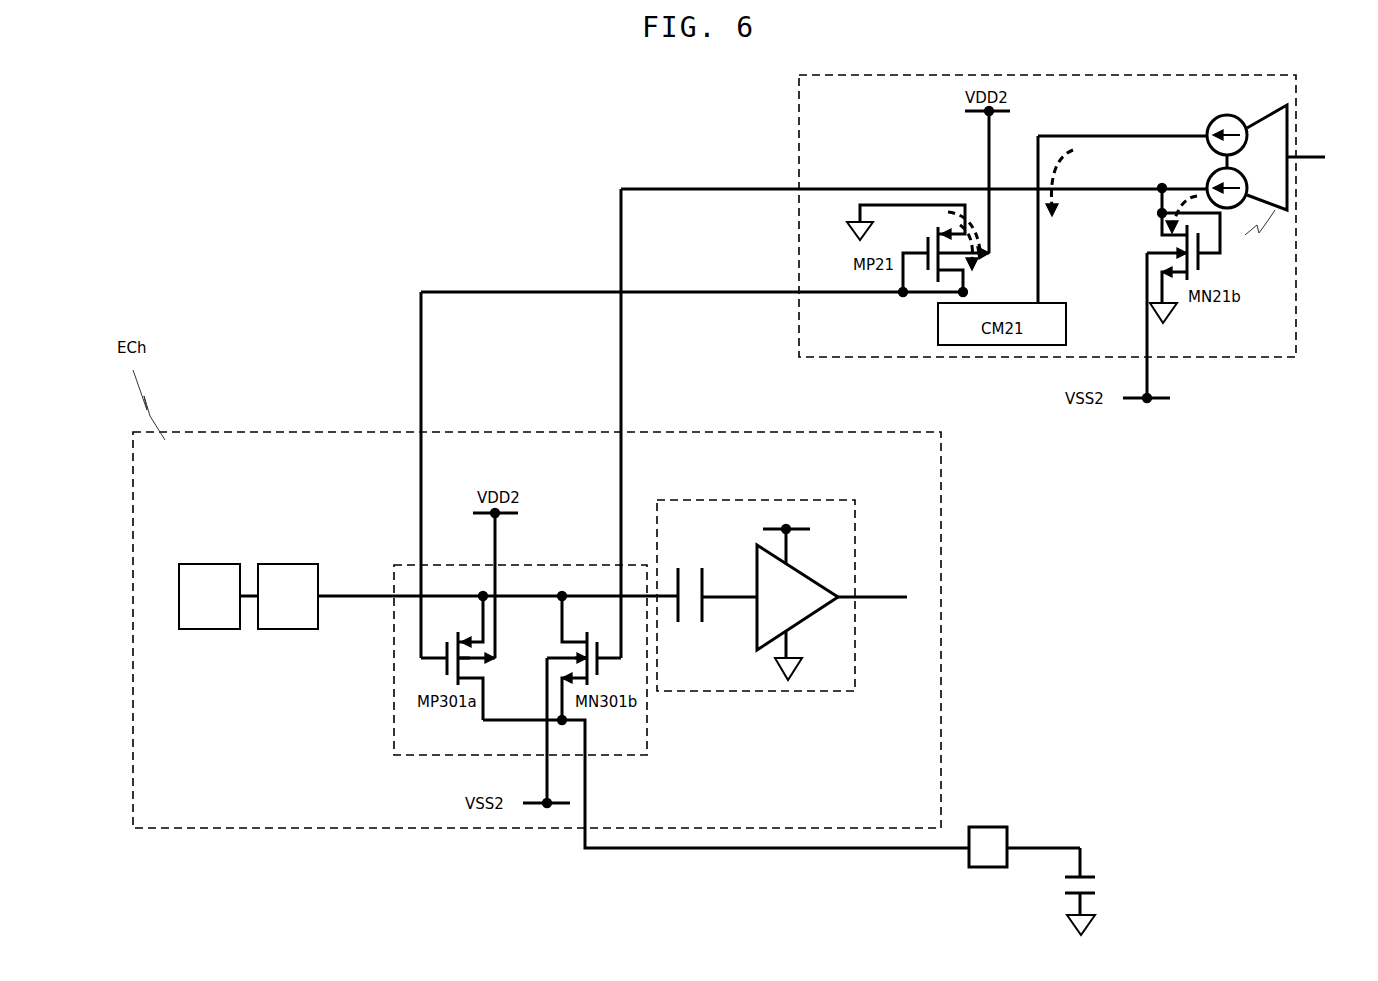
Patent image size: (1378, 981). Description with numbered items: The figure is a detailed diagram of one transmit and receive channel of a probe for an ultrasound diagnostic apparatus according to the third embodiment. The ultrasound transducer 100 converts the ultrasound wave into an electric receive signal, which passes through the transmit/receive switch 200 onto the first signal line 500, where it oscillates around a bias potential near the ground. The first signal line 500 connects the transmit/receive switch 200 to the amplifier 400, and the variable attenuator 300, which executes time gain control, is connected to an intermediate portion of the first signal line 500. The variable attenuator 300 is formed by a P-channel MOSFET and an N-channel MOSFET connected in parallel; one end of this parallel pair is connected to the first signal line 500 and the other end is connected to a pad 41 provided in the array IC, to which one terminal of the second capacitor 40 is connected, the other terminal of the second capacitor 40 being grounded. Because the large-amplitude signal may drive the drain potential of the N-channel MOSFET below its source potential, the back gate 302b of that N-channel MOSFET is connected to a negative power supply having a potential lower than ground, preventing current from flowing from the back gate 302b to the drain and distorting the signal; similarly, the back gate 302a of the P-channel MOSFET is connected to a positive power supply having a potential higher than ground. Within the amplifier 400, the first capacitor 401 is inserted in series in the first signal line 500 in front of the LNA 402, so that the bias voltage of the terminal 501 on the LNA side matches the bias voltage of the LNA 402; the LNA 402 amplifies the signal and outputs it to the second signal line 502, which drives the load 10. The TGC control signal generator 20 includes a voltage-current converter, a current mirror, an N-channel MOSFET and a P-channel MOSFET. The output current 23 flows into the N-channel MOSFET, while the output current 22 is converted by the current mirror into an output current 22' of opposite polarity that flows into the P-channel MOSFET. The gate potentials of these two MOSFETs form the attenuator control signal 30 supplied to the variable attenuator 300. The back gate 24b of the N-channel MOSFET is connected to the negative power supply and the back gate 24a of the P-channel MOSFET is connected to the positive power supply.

The load (speaker / output device) with current sources VIC21 10 is at (1305, 145).
The TGC control signal generator 20 is at (1283, 330).
The output current 22 is at (1122, 194).
The output current 22' is at (954, 194).
The output current 23 is at (1177, 197).
The back gate 24a is at (960, 263).
The back gate 24b is at (1183, 247).
The attenuator control signal 30 is at (718, 300).
The second capacitor 40 is at (1100, 875).
The pad 41 is at (990, 837).
The ultrasound transducer 100 is at (209, 596).
The transmit/receive switch 200 is at (279, 596).
The variable attenuator 300 is at (633, 742).
The back gate 302a is at (460, 665).
The back gate 302b is at (580, 655).
The amplifier 400 is at (852, 635).
The first capacitor 401 is at (685, 570).
The LNA 402 is at (805, 572).
The first signal line 500 is at (335, 590).
The terminal 501 is at (728, 602).
The second signal line 502 is at (892, 587).